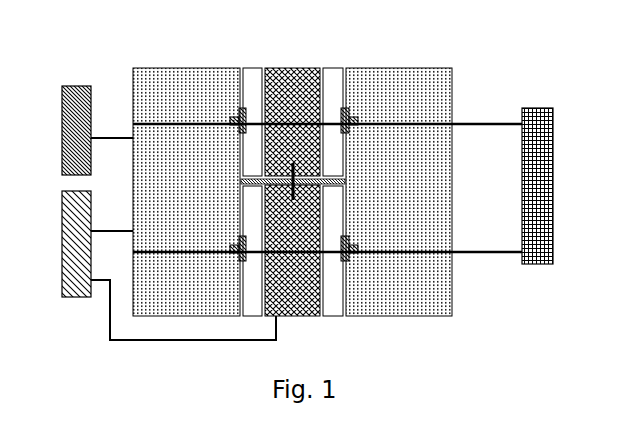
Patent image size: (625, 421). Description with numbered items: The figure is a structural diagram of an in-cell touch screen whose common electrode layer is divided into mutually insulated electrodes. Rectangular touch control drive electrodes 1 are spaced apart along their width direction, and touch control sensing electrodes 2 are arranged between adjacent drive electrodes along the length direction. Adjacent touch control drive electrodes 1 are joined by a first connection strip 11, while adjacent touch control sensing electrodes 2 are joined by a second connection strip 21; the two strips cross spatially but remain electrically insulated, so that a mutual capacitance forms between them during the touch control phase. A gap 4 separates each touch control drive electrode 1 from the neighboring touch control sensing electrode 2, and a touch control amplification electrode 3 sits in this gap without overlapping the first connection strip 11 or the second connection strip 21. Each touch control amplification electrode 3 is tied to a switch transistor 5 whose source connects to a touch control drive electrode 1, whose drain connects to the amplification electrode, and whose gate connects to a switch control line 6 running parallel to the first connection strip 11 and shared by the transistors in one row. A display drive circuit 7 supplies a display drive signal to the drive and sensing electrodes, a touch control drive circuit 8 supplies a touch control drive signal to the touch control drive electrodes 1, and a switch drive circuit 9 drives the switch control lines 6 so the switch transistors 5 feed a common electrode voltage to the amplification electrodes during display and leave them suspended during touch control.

The touch control drive electrode 1 is at (150, 92).
The touch control sensing electrode 2 is at (305, 300).
The touch control amplification electrode 3 is at (335, 77).
The gap 4 is at (343, 107).
The switch transistor 5 is at (239, 108).
The switch control line 6 is at (429, 123).
The display drive circuit 7 is at (74, 218).
The touch control drive circuit 8 is at (70, 105).
The switch drive circuit 9 is at (546, 146).
The first connection strip 11 is at (343, 183).
The second connection strip 21 is at (295, 167).